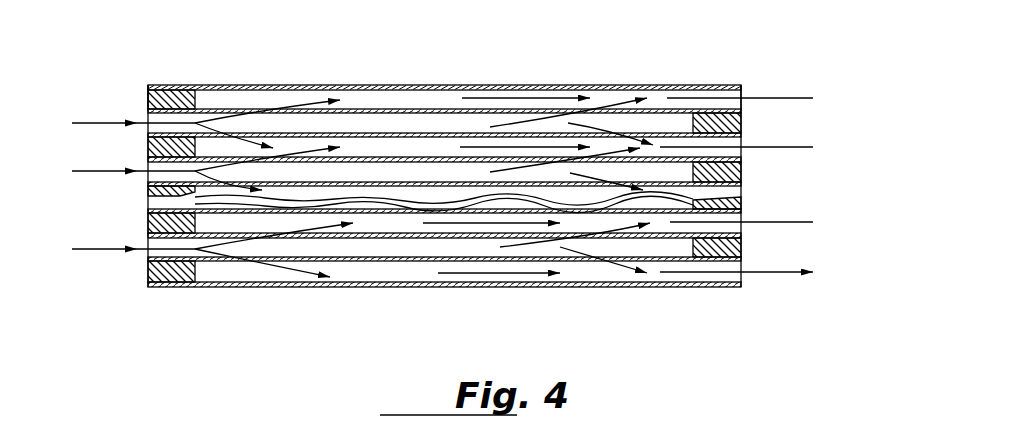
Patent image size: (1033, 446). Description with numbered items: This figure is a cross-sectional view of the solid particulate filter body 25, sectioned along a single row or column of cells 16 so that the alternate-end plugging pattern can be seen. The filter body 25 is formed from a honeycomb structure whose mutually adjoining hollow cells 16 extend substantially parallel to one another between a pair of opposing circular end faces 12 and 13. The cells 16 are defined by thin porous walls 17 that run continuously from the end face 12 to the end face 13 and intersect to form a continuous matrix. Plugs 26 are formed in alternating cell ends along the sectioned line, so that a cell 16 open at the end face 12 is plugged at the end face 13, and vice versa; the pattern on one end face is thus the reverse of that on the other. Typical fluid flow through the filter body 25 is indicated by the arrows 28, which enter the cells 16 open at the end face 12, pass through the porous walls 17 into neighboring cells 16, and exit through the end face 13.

The end face 12 is at (147, 92).
The end face 13 is at (743, 90).
The cells 16 is at (445, 123).
The porous walls 17 is at (395, 133).
The solid particulate filter body 25 is at (451, 195).
The plugs 26 is at (148, 101).
The arrows 28 is at (88, 171).